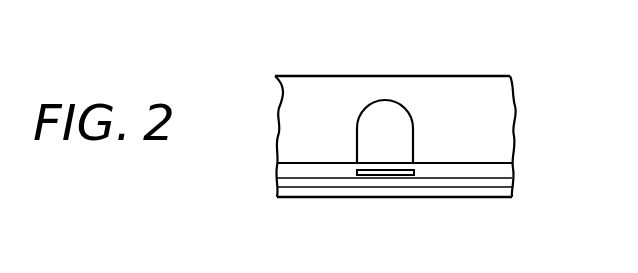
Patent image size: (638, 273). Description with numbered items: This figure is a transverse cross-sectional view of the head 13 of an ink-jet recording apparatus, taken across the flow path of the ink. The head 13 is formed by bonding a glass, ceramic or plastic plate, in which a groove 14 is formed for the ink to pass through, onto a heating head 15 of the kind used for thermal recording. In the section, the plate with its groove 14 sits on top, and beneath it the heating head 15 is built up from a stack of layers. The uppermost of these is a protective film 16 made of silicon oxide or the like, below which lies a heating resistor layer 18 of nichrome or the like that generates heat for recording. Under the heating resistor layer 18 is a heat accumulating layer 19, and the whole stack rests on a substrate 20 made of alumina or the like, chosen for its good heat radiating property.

The head 13 is at (302, 76).
The groove 14 is at (393, 100).
The heating head 15 is at (518, 162).
The protective film 16 is at (460, 163).
The heating resistor layer 18 is at (378, 172).
The heat accumulating layer 19 is at (483, 182).
The substrate 20 is at (472, 190).